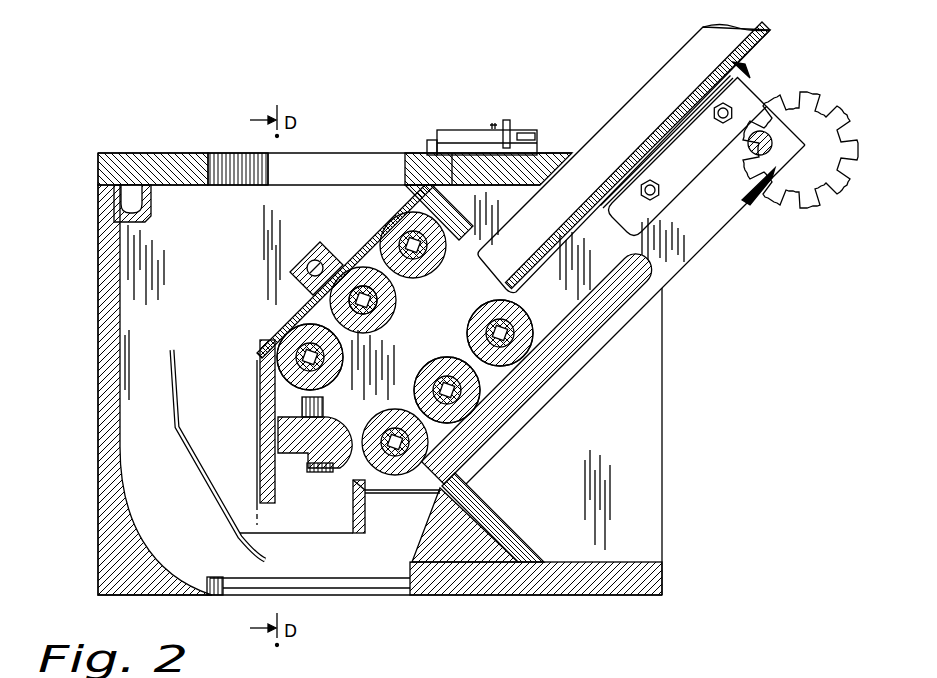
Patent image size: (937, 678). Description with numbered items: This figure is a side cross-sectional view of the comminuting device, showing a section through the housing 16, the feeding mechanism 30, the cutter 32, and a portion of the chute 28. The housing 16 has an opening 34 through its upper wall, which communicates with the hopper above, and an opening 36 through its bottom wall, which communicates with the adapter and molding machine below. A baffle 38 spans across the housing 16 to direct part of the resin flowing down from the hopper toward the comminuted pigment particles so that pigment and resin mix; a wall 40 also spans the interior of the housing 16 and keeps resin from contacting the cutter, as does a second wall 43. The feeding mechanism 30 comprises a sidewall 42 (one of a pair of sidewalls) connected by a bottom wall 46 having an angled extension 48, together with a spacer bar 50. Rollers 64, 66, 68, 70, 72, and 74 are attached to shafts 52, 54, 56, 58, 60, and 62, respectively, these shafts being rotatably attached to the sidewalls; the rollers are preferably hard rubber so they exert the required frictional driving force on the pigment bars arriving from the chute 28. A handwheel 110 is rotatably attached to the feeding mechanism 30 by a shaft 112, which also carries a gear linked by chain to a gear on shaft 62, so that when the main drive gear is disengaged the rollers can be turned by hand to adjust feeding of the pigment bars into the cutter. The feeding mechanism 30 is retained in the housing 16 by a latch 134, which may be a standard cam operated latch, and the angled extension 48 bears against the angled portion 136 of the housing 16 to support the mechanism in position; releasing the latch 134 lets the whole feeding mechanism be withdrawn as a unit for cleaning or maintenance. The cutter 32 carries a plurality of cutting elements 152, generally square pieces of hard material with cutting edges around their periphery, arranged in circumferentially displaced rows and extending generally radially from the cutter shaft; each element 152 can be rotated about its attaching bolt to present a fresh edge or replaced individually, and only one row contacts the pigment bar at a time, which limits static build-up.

The housing 16 is at (110, 400).
The chute 28 is at (653, 87).
The feeding mechanism 30 is at (688, 281).
The cutter 32 is at (272, 440).
The opening 34 is at (345, 163).
The opening 36 is at (330, 595).
The baffle 38 is at (193, 470).
The wall 40 is at (260, 360).
The sidewall 42 is at (712, 232).
The wall 43 is at (260, 352).
The bottom wall 46 is at (640, 280).
The angled extension 48 is at (497, 517).
The spacer bar 50 is at (447, 218).
The shaft 52 is at (300, 360).
The shaft 54 is at (357, 300).
The shaft 56 is at (380, 210).
The shaft 58 is at (395, 457).
The shaft 60 is at (460, 402).
The shaft 62 is at (530, 325).
The roller 64 is at (292, 345).
The roller 66 is at (350, 270).
The roller 68 is at (398, 215).
The roller 70 is at (437, 493).
The roller 72 is at (450, 395).
The roller 74 is at (500, 333).
The handwheel 110 is at (805, 82).
The shaft 112 is at (787, 160).
The latch 134 is at (482, 126).
The angled portion 136 is at (500, 587).
The cutting elements 152 is at (323, 401).